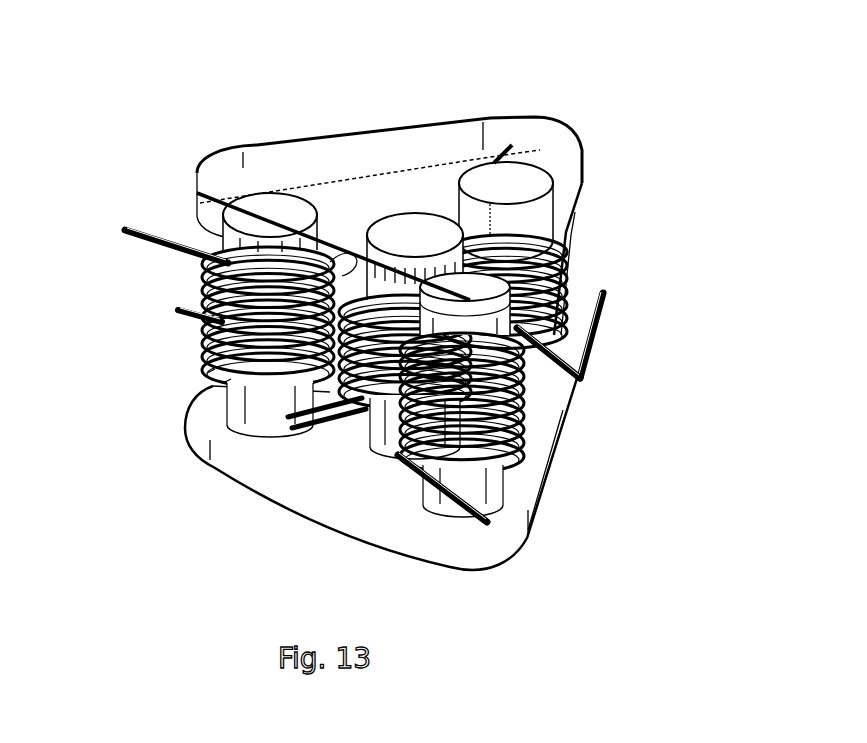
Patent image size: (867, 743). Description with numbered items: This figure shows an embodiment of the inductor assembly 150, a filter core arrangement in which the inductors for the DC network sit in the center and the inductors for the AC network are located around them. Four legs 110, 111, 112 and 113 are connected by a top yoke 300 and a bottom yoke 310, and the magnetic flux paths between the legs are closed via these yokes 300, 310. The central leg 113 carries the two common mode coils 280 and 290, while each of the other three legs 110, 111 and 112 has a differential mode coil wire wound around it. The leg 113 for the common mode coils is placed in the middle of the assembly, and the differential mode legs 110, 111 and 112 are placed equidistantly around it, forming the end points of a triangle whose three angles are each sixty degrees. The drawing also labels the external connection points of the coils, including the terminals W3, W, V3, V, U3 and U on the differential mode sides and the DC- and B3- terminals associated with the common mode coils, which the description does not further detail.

The inductor assembly 150 is at (673, 70).
The top yoke 300 is at (272, 165).
The bottom yoke 310 is at (280, 477).
The leg 110 is at (275, 215).
The leg 111 is at (480, 290).
The leg 112 is at (490, 187).
The leg 113 is at (408, 238).
The common mode coil 290 is at (350, 240).
The common mode coil 280 is at (249, 481).
The terminal W3 is at (123, 222).
The terminal W is at (165, 310).
The terminal V3 is at (512, 143).
The terminal V is at (612, 290).
The terminal U3 is at (585, 380).
The terminal U is at (492, 525).
The DC negative terminal DC- is at (223, 383).
The terminal B3- is at (292, 433).